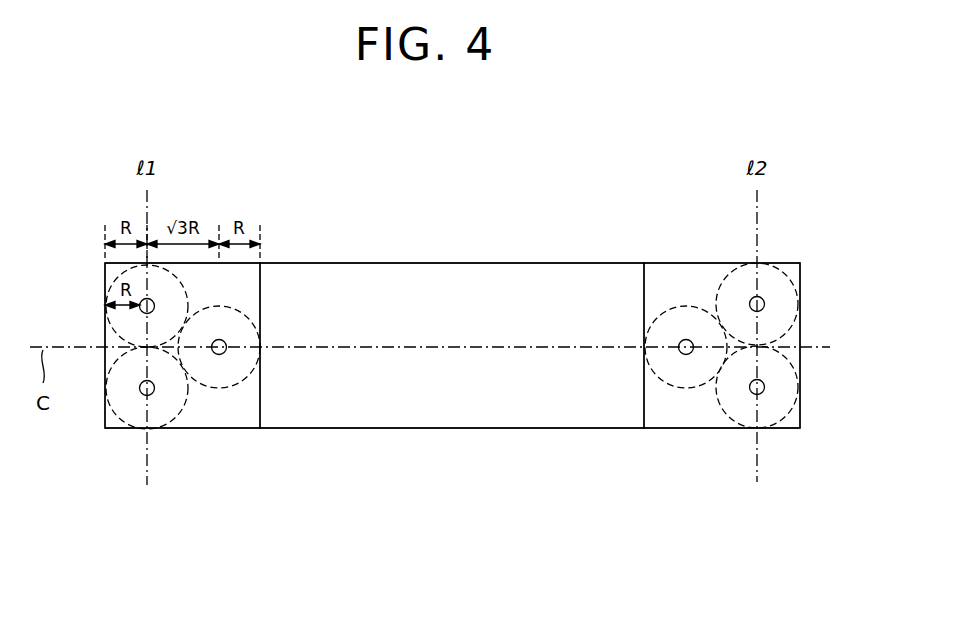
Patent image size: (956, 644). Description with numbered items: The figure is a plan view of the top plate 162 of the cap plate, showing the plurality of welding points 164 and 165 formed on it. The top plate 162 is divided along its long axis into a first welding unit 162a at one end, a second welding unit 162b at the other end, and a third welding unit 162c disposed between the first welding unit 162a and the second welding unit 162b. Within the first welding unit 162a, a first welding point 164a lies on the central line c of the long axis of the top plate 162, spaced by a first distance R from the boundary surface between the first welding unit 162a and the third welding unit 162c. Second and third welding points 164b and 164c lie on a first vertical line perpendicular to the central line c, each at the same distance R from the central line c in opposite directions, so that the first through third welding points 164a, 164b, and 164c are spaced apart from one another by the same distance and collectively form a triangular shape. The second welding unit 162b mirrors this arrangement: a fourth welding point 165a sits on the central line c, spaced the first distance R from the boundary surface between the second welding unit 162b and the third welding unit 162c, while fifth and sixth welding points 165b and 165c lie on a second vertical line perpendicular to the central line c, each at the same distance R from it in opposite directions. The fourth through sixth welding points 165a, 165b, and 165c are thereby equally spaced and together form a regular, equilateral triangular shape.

The top plate 162 is at (452, 295).
The first welding unit 162a is at (260, 298).
The second welding unit 162b is at (658, 314).
The third welding unit 162c is at (449, 282).
The welding points 164 is at (172, 443).
The first welding point 164a is at (221, 354).
The second welding point 164b is at (143, 312).
The third welding point 164c is at (149, 395).
The welding points 165 is at (735, 442).
The fourth welding point 165a is at (685, 354).
The fifth welding point 165b is at (760, 311).
The sixth welding point 165c is at (756, 394).